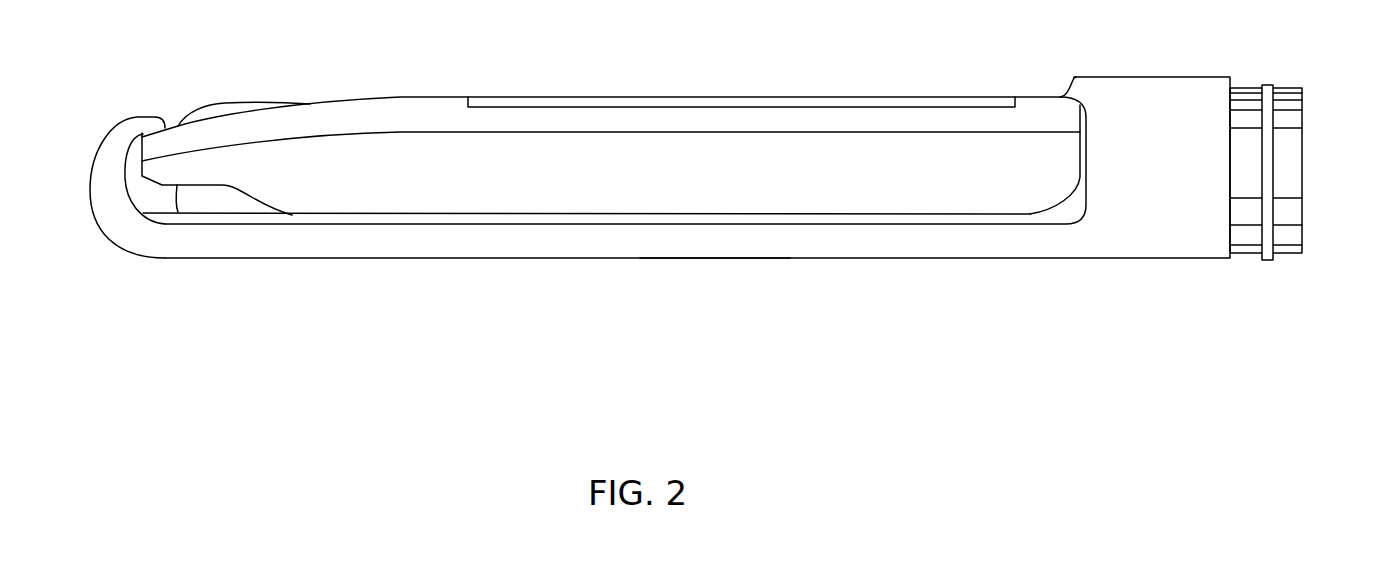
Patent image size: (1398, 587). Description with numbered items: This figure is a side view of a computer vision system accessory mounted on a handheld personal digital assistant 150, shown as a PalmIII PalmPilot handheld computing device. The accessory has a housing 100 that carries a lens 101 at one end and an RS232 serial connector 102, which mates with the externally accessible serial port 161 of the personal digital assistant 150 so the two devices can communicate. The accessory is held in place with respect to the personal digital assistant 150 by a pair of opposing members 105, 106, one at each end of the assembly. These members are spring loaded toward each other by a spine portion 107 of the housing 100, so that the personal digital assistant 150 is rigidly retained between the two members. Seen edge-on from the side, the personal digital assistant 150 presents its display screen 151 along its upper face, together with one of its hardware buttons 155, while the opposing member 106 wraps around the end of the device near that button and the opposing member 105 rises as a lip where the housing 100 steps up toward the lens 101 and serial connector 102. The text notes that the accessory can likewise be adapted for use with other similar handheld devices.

The housing 100 is at (1170, 263).
The lens 101 is at (1302, 168).
The serial connector 102 is at (193, 218).
The opposing member 105 is at (1074, 77).
The opposing member 106 is at (146, 117).
The spine portion 107 is at (713, 263).
The personal digital assistant 150 is at (280, 100).
The display screen 151 is at (622, 96).
The hardware button 155 is at (187, 113).
The serial port 161 is at (229, 203).